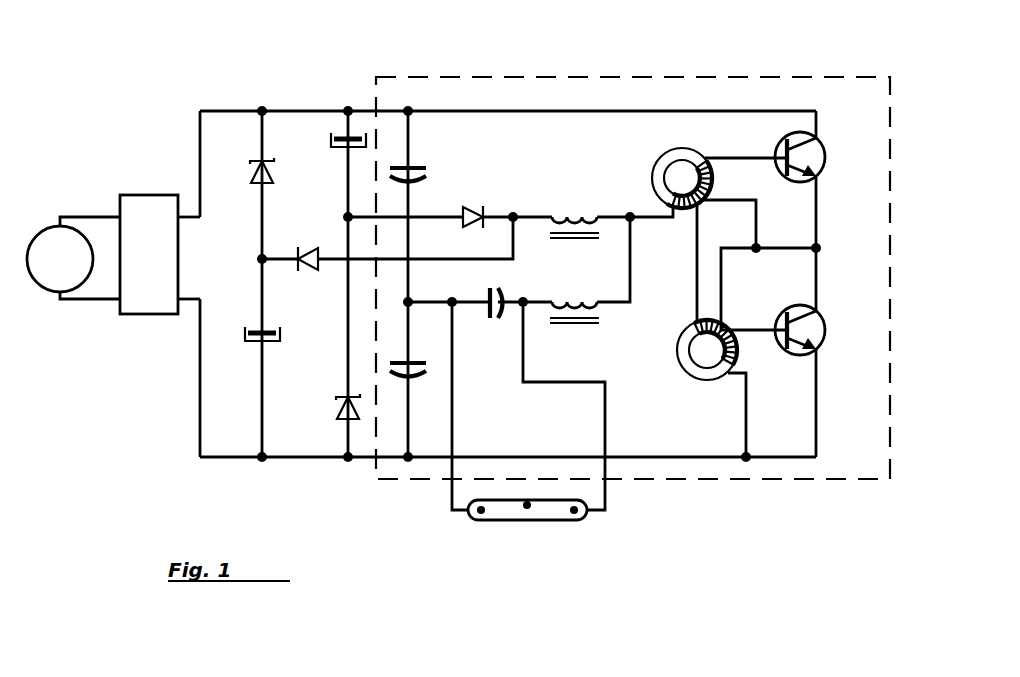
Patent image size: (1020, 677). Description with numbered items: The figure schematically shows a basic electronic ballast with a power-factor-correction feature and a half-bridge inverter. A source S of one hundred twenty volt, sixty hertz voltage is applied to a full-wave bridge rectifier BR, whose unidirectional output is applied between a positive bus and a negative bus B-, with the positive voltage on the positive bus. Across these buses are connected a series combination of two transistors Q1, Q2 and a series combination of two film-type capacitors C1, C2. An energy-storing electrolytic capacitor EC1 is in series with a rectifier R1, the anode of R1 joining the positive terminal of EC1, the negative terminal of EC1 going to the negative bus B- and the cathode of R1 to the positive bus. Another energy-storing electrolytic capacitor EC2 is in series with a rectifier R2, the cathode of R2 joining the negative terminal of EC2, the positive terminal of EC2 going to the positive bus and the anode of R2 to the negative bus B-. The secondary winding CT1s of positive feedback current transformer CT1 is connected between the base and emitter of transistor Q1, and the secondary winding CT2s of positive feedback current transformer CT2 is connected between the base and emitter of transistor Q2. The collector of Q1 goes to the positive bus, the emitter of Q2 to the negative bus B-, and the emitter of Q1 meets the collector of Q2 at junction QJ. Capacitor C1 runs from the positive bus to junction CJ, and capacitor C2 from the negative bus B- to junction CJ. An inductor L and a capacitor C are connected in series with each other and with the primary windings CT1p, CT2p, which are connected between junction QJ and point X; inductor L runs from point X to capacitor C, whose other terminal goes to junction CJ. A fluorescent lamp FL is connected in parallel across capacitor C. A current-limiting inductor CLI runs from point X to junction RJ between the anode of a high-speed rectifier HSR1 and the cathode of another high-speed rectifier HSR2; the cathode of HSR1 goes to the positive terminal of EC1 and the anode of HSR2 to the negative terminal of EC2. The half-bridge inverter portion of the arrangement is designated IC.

The source S is at (70, 272).
The full-wave bridge rectifier BR is at (167, 272).
The B− bus B- is at (212, 458).
The rectifier R1 is at (253, 172).
The rectifier R2 is at (338, 397).
The energy-storing electrolytic capacitor EC1 is at (248, 333).
The energy-storing electrolytic capacitor EC2 is at (335, 146).
The high-speed rectifier HSR1 is at (302, 272).
The high-speed rectifier HSR2 is at (478, 207).
The film-type capacitor C1 is at (420, 166).
The film-type capacitor C2 is at (414, 380).
The capacitor C is at (498, 320).
The junction CJ is at (412, 300).
The junction RJ is at (517, 222).
The current-limiting inductor CLI is at (578, 214).
The inductor L is at (572, 324).
The point X is at (628, 214).
The positive feedback current transformer CT1 is at (664, 158).
The primary winding CT1p is at (686, 210).
The secondary winding CT1s is at (718, 177).
The positive feedback current transformer CT2 is at (700, 381).
The primary winding CT2p is at (706, 320).
The secondary winding CT2s is at (740, 352).
The transistor Q1 is at (826, 150).
The transistor Q2 is at (822, 342).
The junction QJ is at (820, 246).
The half-bridge inverter circuit IC is at (632, 77).
The fluorescent lamp FL is at (548, 521).